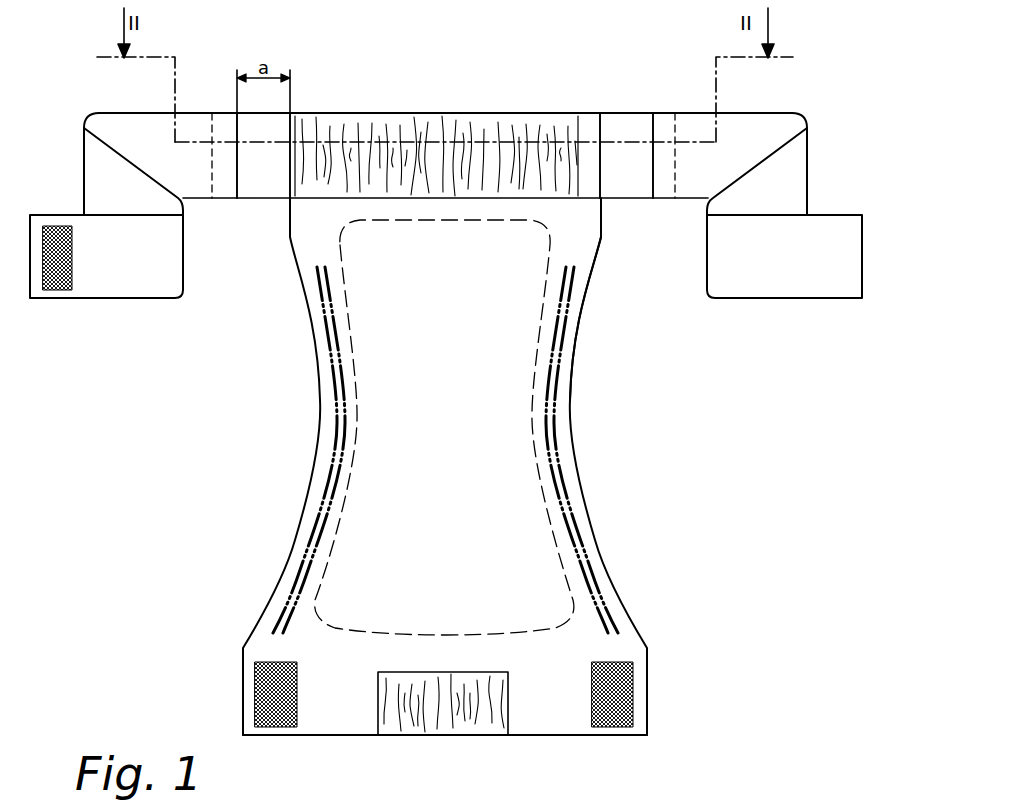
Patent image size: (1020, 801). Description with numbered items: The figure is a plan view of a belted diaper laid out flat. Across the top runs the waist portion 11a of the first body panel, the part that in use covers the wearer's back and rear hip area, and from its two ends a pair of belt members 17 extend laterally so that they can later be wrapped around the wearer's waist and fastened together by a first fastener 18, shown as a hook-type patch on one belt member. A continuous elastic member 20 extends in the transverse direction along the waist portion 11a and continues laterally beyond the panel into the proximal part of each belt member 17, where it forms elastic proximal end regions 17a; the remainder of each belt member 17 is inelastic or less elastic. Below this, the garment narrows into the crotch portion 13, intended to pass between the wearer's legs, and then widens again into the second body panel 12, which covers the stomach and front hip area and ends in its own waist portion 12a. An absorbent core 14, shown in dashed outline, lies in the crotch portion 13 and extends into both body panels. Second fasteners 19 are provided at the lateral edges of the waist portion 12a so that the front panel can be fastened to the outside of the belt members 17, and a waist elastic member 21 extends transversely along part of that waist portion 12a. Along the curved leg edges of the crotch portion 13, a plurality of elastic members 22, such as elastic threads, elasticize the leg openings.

The waist portion 11a is at (460, 113).
The second body panel 12 is at (528, 663).
The waist portion 12a is at (550, 735).
The crotch portion 13 is at (571, 412).
The absorbent core 14 is at (497, 480).
The belt members 17 is at (122, 272).
The elastic proximal end regions 17a is at (623, 125).
The first fastener 18 is at (53, 292).
The second fasteners 19 is at (262, 714).
The elastic member 20 is at (548, 125).
The waist elastic member 21 is at (415, 722).
The elastic members 22 is at (335, 392).